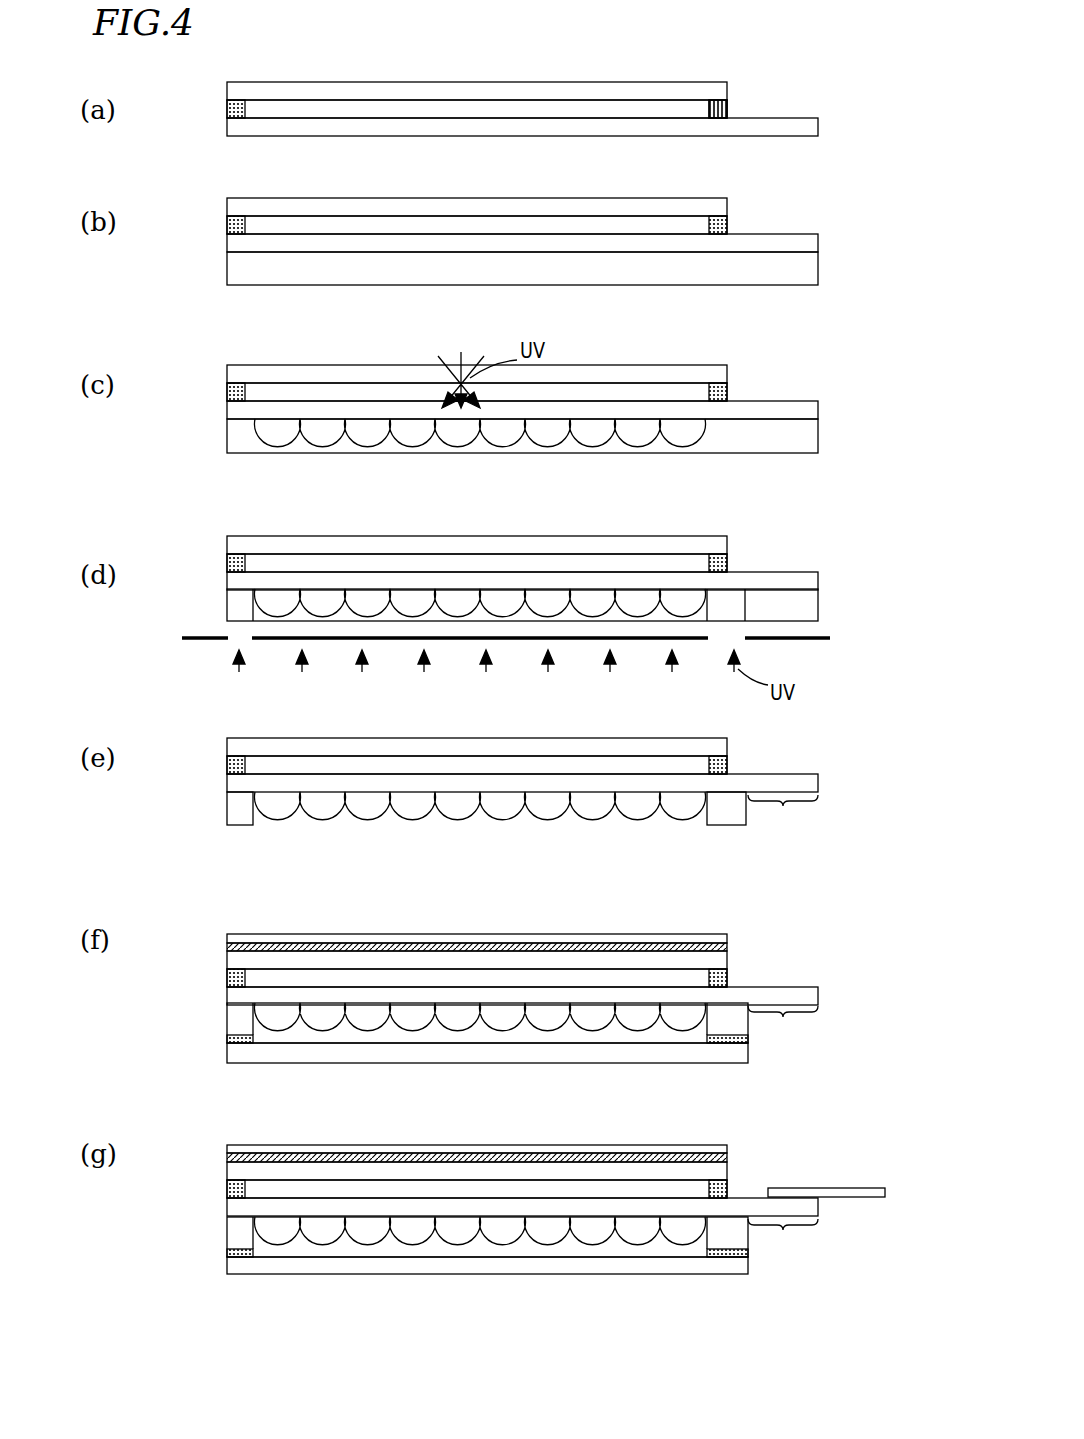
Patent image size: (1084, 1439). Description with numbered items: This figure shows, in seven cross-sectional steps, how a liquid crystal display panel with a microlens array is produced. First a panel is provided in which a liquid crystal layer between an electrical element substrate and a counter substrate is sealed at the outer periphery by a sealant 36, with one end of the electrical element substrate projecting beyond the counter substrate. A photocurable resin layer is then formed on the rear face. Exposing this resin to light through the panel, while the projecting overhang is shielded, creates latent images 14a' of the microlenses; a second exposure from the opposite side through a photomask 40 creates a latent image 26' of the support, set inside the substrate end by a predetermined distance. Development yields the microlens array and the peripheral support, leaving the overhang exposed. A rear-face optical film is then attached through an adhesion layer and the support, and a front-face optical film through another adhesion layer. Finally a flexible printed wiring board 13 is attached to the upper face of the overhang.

The sealant 36 is at (728, 110).
The latent image of microlens 14a' is at (479, 463).
The latent image of the support 26' is at (500, 606).
The photomask 40 is at (778, 640).
The flexible printed wiring board 13 is at (807, 1195).